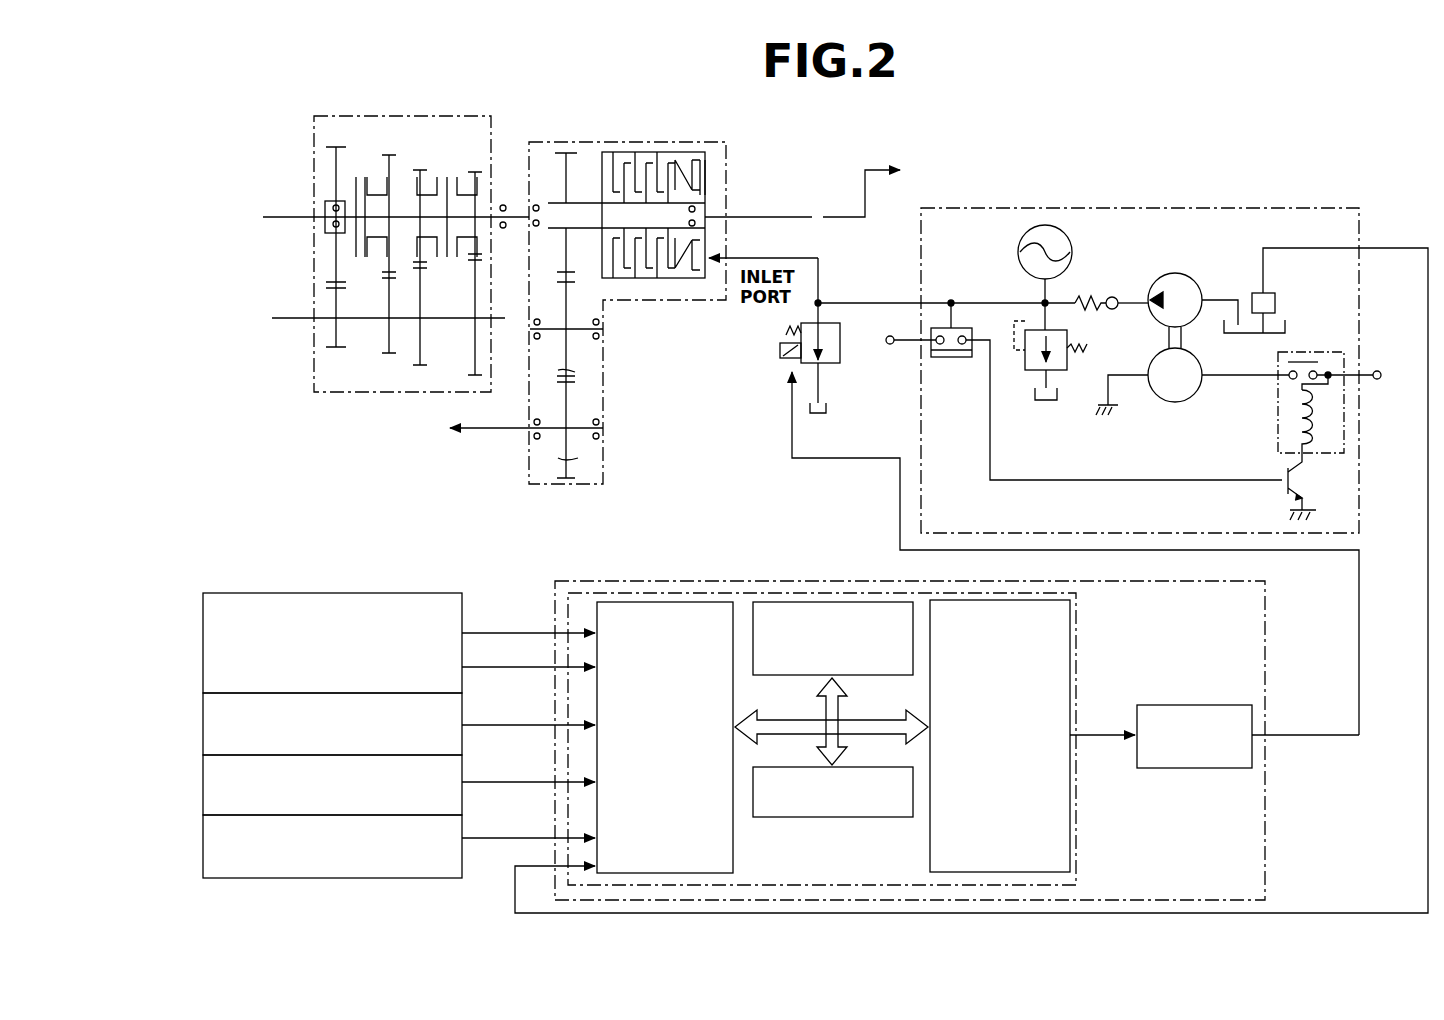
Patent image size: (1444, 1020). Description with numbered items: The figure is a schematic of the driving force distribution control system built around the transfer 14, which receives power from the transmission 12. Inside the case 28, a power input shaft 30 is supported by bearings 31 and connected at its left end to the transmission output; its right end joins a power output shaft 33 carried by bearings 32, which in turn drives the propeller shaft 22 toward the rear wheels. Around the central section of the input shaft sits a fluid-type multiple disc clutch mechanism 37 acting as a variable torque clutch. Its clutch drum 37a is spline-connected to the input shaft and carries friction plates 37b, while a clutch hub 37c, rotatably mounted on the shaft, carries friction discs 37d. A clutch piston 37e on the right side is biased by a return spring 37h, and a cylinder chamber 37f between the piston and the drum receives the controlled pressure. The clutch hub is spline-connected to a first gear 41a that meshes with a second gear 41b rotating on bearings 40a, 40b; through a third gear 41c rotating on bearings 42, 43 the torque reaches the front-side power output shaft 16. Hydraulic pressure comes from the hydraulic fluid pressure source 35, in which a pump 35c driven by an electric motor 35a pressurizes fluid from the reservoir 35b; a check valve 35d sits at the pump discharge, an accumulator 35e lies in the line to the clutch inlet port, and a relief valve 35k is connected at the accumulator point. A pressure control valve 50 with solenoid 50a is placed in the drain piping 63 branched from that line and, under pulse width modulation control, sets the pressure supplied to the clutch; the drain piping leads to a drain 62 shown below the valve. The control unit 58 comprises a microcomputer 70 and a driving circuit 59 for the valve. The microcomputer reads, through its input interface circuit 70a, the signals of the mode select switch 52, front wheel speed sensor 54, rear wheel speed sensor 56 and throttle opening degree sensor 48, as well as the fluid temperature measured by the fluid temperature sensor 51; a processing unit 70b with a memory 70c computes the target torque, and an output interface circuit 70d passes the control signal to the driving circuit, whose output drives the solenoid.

The transmission 12 is at (312, 152).
The transfer 14 is at (592, 140).
The front-side power output shaft 16 is at (506, 430).
The propeller shaft 22 is at (790, 217).
The case 28 is at (604, 158).
The power input shaft 30 is at (548, 205).
The bearings 31 is at (536, 226).
The bearings 32 is at (693, 205).
The power output shaft 33 is at (700, 217).
The hydraulic fluid pressure source 35 is at (971, 527).
The electric motor 35a is at (1193, 400).
The reservoir 35b is at (1287, 330).
The pump 35c is at (1207, 268).
The check valve 35d is at (1112, 310).
The accumulator 35e is at (1066, 248).
The relief valve 35k is at (1070, 378).
The fluid-type multiple disc clutch mechanism 37 is at (705, 212).
The clutch drum 37a is at (687, 152).
The friction plates 37b is at (618, 165).
The clutch hub 37c is at (553, 208).
The friction discs 37d is at (640, 178).
The clutch piston 37e is at (696, 185).
The cylinder chamber 37f is at (700, 250).
The return spring 37h is at (696, 170).
The bearing 40a is at (540, 337).
The bearing 40b is at (600, 336).
The first gear 41a is at (600, 283).
The second gear 41b is at (572, 371).
The third gear 41c is at (575, 458).
The bearing 42 is at (534, 422).
The bearing 43 is at (600, 422).
The throttle opening degree sensor 48 is at (212, 848).
The pressure control valve 50 is at (800, 326).
The solenoid 50a is at (780, 352).
The fluid temperature sensor 51 is at (1276, 306).
The mode select switch 52 is at (200, 641).
The front wheel speed sensor 54 is at (203, 722).
The rear wheel speed sensor 56 is at (203, 785).
The control unit 58 is at (805, 560).
The driving circuit 59 is at (1192, 704).
The drain tank 62 is at (828, 413).
The drain piping 63 is at (822, 385).
The microcomputer 70 is at (740, 590).
The input interface circuit 70a is at (643, 600).
The processing unit 70b is at (838, 600).
The memory 70c is at (862, 817).
The output interface circuit 70d is at (1078, 810).